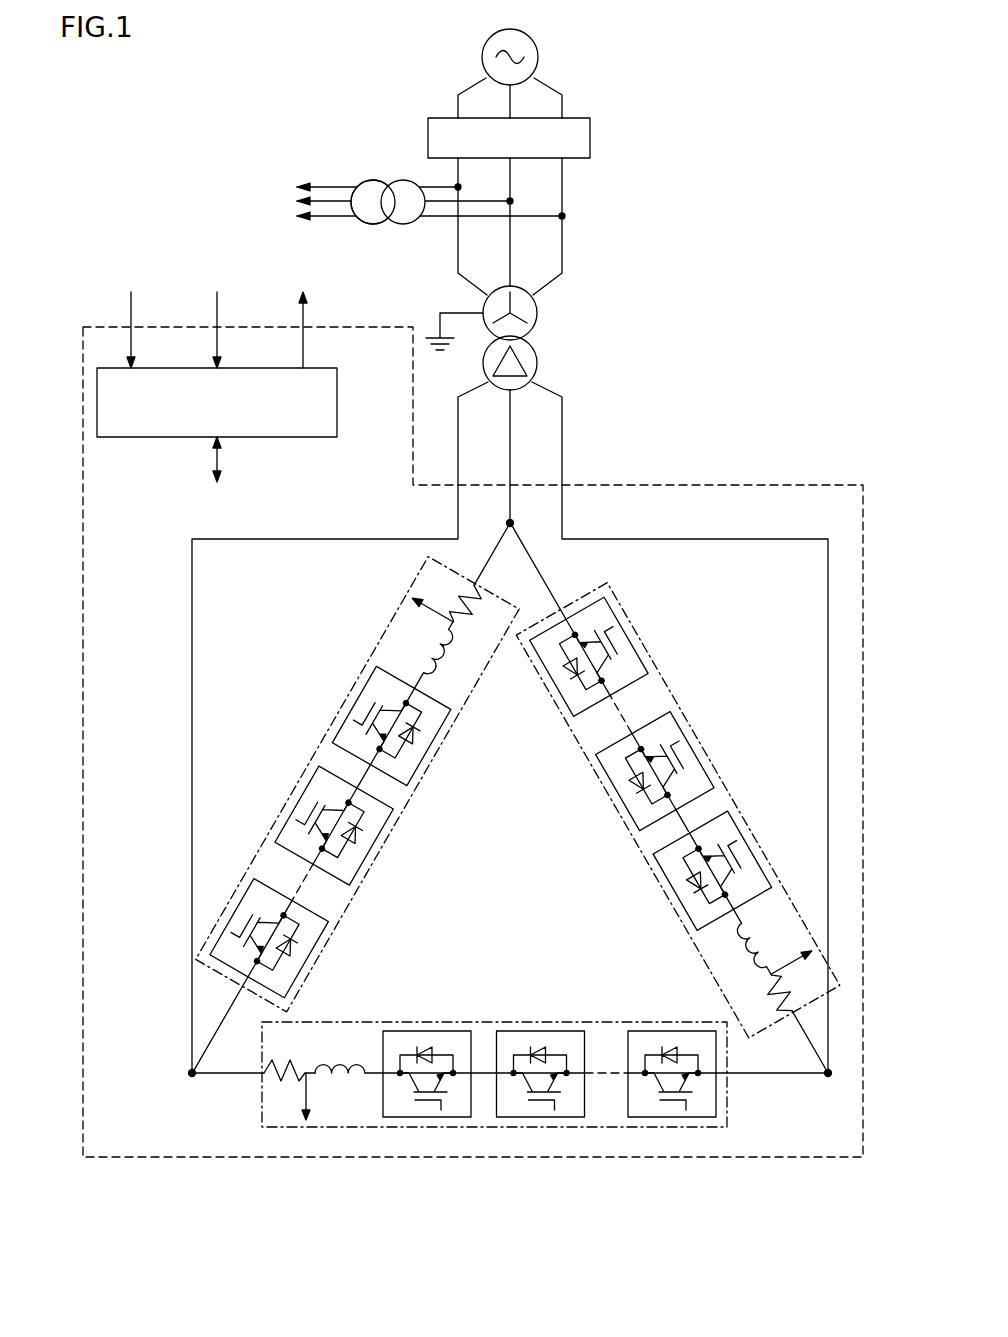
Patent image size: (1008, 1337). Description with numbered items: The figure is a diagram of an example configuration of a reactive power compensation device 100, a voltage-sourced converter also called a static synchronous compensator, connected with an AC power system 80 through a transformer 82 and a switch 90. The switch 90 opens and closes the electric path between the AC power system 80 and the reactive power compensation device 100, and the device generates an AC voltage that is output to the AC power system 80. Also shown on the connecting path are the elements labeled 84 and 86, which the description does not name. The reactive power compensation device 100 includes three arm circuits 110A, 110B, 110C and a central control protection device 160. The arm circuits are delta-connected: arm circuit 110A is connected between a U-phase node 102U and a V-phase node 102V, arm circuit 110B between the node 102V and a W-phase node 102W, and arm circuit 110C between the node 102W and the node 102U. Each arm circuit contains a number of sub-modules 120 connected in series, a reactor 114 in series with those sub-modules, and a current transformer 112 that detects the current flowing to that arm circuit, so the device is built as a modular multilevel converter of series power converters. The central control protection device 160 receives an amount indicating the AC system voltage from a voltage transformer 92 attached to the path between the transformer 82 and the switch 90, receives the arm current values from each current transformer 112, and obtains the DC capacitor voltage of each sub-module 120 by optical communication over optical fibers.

The AC power system 80 is at (540, 52).
The switch 90 is at (592, 138).
The voltage transformer 92 is at (369, 180).
The transformer 82 is at (561, 338).
The primary winding 84 is at (538, 313).
The secondary winding 86 is at (541, 363).
The reactive power compensation device 100 is at (780, 485).
The U-phase node 102U is at (191, 1080).
The V-phase node 102V is at (515, 522).
The W-phase node 102W is at (829, 1080).
The arm circuit 110A is at (394, 823).
The arm circuit 110B is at (670, 686).
The arm circuit 110C is at (490, 1022).
The current transformer 112 is at (450, 595).
The reactor 114 is at (453, 658).
The sub-module 120 is at (437, 745).
The central control protection device 160 is at (339, 403).